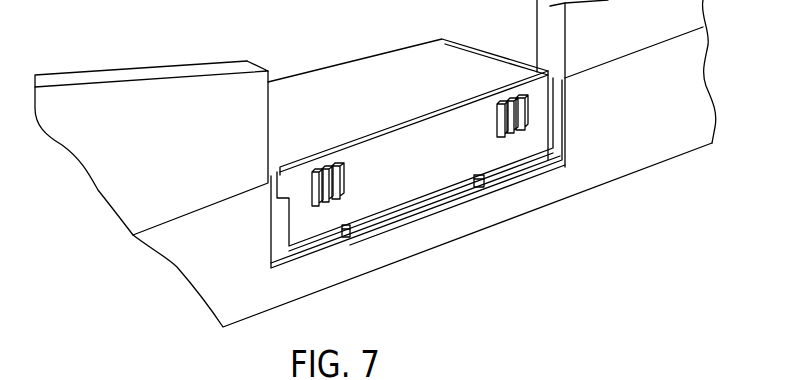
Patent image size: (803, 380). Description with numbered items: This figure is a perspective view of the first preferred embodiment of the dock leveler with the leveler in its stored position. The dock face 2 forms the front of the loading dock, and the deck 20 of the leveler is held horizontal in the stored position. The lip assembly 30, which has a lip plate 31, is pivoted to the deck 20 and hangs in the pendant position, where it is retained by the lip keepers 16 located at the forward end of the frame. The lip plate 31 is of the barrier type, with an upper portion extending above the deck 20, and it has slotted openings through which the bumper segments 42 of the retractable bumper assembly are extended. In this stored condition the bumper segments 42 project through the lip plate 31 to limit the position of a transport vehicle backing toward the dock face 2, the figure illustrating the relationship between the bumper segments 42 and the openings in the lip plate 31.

The dock face 2 is at (222, 300).
The lip keepers 16 is at (481, 190).
The deck 20 is at (355, 68).
The lip assembly 30 is at (414, 108).
The lip plate 31 is at (484, 100).
The bumper segments 42 is at (497, 122).